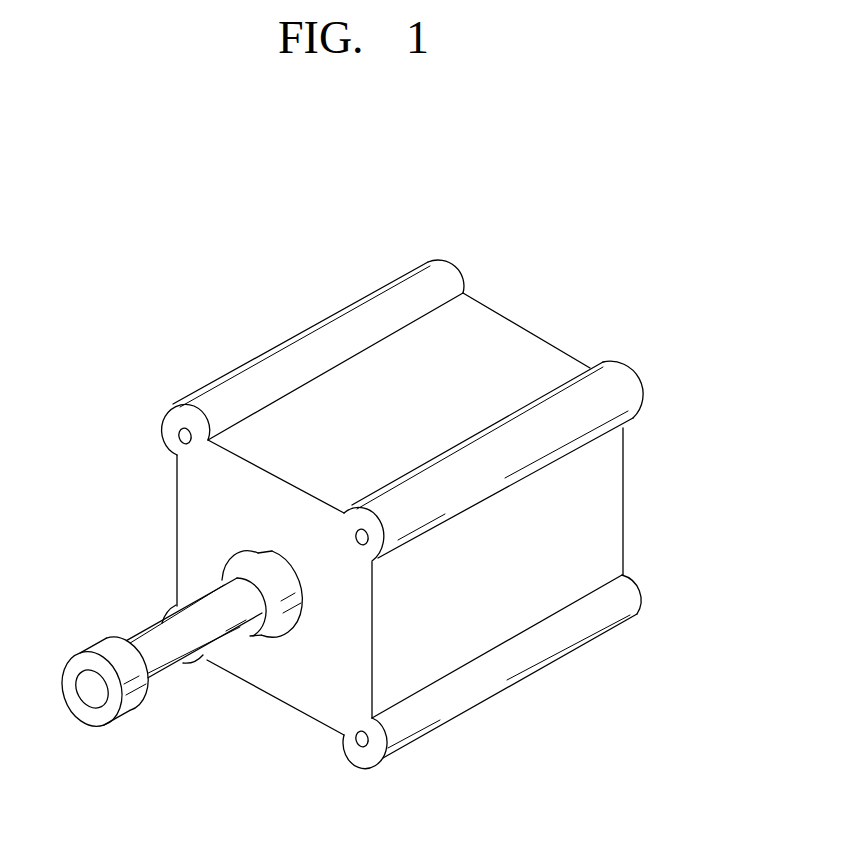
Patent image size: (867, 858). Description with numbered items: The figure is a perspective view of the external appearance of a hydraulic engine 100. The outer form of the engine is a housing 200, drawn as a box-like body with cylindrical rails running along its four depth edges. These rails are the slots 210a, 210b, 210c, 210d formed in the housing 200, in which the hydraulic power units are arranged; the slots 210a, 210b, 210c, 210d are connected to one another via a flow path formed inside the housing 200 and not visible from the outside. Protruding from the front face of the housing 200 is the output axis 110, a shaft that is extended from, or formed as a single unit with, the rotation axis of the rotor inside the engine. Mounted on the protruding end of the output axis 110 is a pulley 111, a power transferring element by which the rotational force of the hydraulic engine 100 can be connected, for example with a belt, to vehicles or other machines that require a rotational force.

The hydraulic engine 100 is at (554, 275).
The output axis 110 is at (175, 668).
The pulley 111 is at (97, 720).
The housing 200 is at (302, 698).
The slot 210a is at (265, 364).
The slot 210b is at (627, 388).
The slot 210c is at (478, 693).
The slot 210d is at (172, 605).